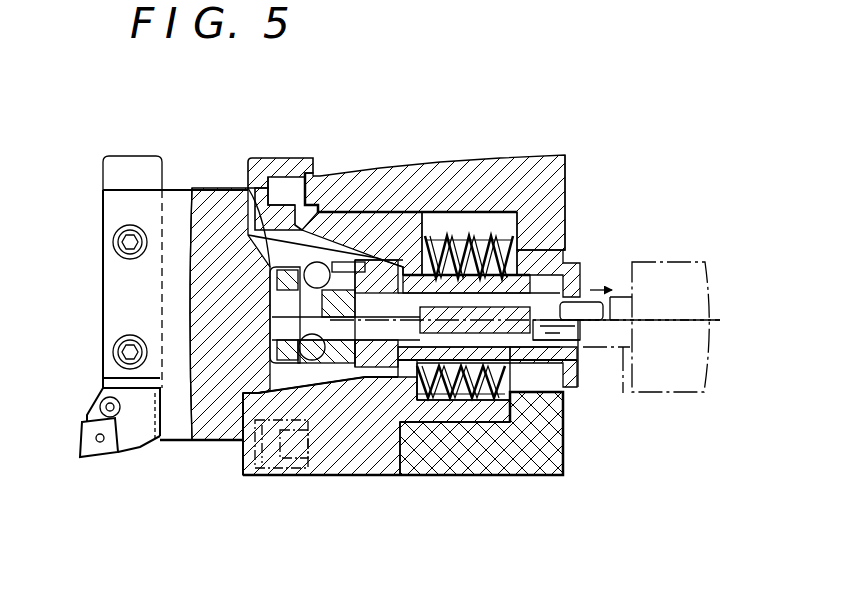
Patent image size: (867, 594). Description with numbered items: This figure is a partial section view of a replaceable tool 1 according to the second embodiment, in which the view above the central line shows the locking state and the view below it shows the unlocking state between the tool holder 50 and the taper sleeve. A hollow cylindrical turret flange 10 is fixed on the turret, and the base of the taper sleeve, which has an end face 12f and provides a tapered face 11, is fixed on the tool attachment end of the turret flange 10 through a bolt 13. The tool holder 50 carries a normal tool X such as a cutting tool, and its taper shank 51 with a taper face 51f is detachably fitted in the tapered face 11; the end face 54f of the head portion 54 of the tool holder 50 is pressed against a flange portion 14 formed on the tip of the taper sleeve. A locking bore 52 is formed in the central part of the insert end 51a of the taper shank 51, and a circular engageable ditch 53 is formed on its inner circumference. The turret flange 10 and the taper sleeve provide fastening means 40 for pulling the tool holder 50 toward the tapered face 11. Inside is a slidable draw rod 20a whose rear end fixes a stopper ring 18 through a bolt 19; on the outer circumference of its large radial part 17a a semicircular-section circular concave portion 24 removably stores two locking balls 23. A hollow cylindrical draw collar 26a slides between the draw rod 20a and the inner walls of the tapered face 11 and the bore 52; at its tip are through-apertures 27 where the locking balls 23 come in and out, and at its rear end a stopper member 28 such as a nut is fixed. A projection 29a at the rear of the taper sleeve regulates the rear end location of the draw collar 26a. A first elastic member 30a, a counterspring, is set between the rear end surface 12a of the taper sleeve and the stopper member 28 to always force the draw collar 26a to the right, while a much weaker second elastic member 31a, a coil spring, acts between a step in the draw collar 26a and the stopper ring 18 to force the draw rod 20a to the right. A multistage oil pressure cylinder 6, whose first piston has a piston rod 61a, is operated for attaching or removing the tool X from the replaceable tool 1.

The replaceable tool 1 is at (552, 100).
The cylinder 6 is at (691, 252).
The turret flange 10 is at (392, 480).
The tapered face 11 is at (222, 422).
The rear end surface 12a is at (482, 458).
The end face 12f is at (243, 450).
The bolt 13 is at (243, 447).
The flange portion 14 is at (256, 168).
The large radial part 17a is at (395, 240).
The stopper ring 18 is at (582, 263).
The bolt 19 is at (570, 334).
The draw rod 20a is at (432, 442).
The locking balls 23 is at (338, 258).
The circular concave portion 24 is at (362, 290).
The draw collar 26a is at (447, 230).
The through-aperture 27 is at (268, 250).
The stopper member 28 is at (560, 240).
The projection 29a is at (510, 452).
The first elastic member 30a is at (512, 204).
The second elastic member 31a is at (566, 196).
The fastening means 40 is at (470, 215).
The tool holder 50 is at (175, 182).
The taper shank 51 is at (285, 215).
The insert end 51a is at (322, 422).
The taper face 51f is at (290, 196).
The locking bore 52 is at (345, 250).
The engageable ditch 53 is at (318, 228).
The head portion 54 is at (203, 422).
The end face 54f is at (262, 462).
The piston rod 61a is at (623, 394).
The tool X is at (86, 398).